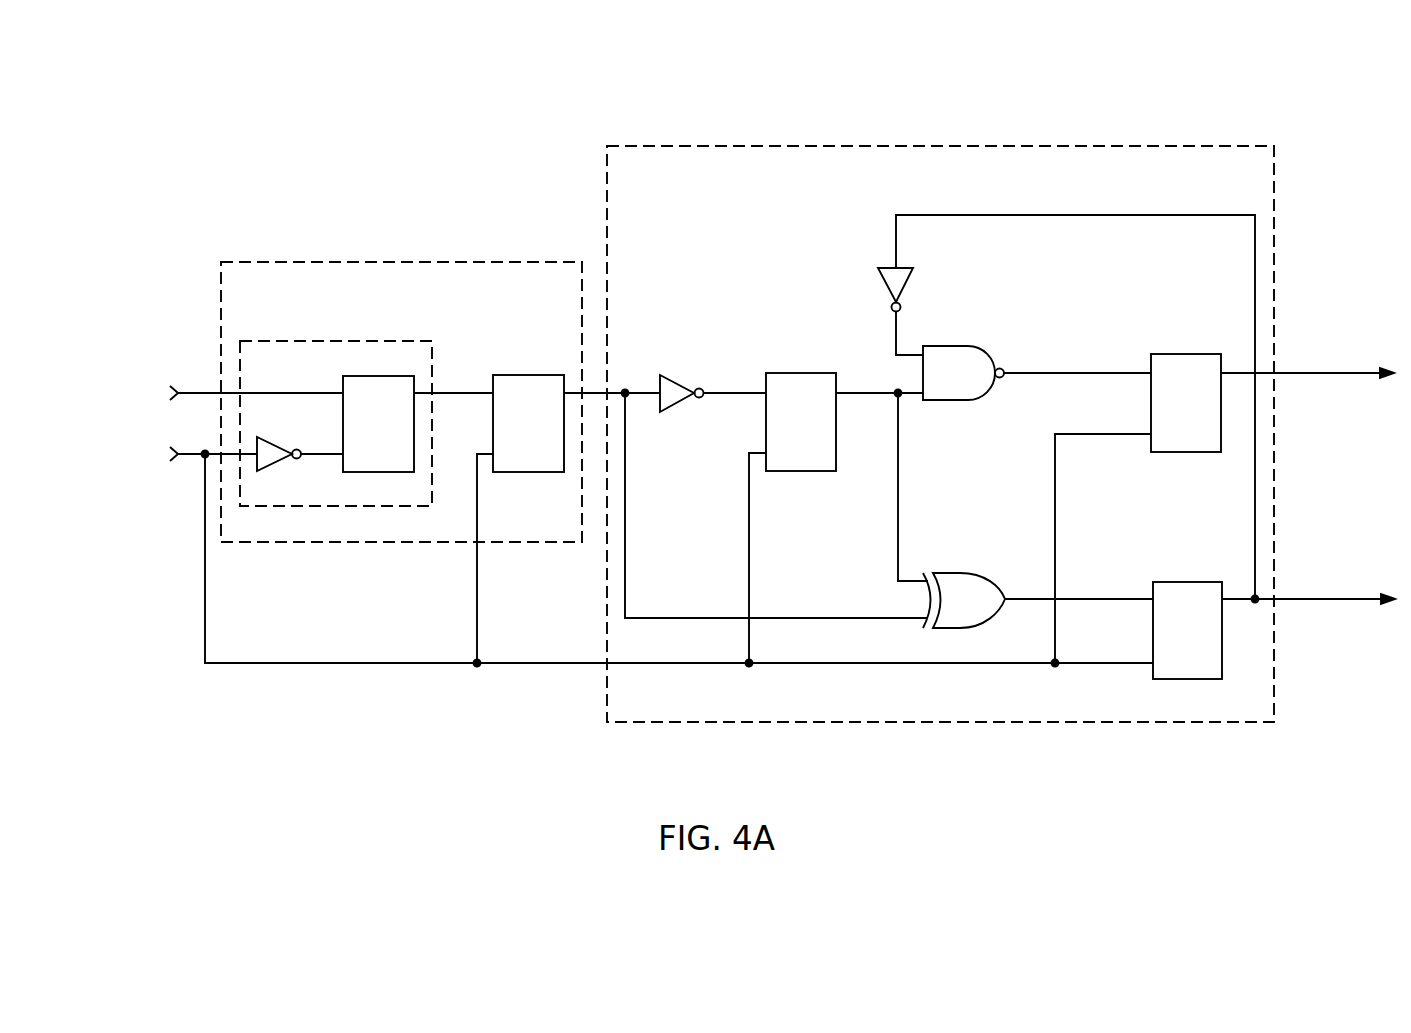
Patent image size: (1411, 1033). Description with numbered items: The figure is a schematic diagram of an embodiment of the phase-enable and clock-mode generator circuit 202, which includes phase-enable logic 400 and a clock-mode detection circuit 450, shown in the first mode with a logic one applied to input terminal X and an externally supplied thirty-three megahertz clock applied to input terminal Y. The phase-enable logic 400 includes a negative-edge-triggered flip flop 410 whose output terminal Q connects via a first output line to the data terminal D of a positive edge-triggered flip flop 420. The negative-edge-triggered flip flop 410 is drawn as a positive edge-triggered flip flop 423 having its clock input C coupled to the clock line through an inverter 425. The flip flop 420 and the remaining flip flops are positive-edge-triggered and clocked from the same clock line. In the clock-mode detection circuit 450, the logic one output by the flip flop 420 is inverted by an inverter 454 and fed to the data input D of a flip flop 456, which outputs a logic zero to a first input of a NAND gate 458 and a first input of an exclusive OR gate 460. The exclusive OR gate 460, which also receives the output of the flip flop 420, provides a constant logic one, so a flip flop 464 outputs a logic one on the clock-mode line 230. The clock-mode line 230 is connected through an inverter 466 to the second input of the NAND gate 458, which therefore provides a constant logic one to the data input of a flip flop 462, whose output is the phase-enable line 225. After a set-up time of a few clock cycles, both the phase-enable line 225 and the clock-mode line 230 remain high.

The phase-enable and clock-mode generator circuit 202 is at (752, 90).
The phase-enable logic 400 is at (548, 316).
The negative-edge-triggered flip flop 410 is at (281, 370).
The positive edge-triggered flip flop 420 is at (528, 472).
The positive edge-triggered flip flop 423 is at (388, 472).
The inverter 425 is at (272, 468).
The clock-mode detection circuit 450 is at (737, 232).
The inverter 454 is at (678, 408).
The flip flop 456 is at (800, 471).
The NAND gate 458 is at (972, 389).
The exclusive OR gate 460 is at (985, 611).
The flip flop 462 is at (1195, 354).
The flip flop 464 is at (1193, 582).
The inverter 466 is at (913, 285).
The phase-enable line 225 is at (1310, 374).
The clock-mode line 230 is at (1313, 600).